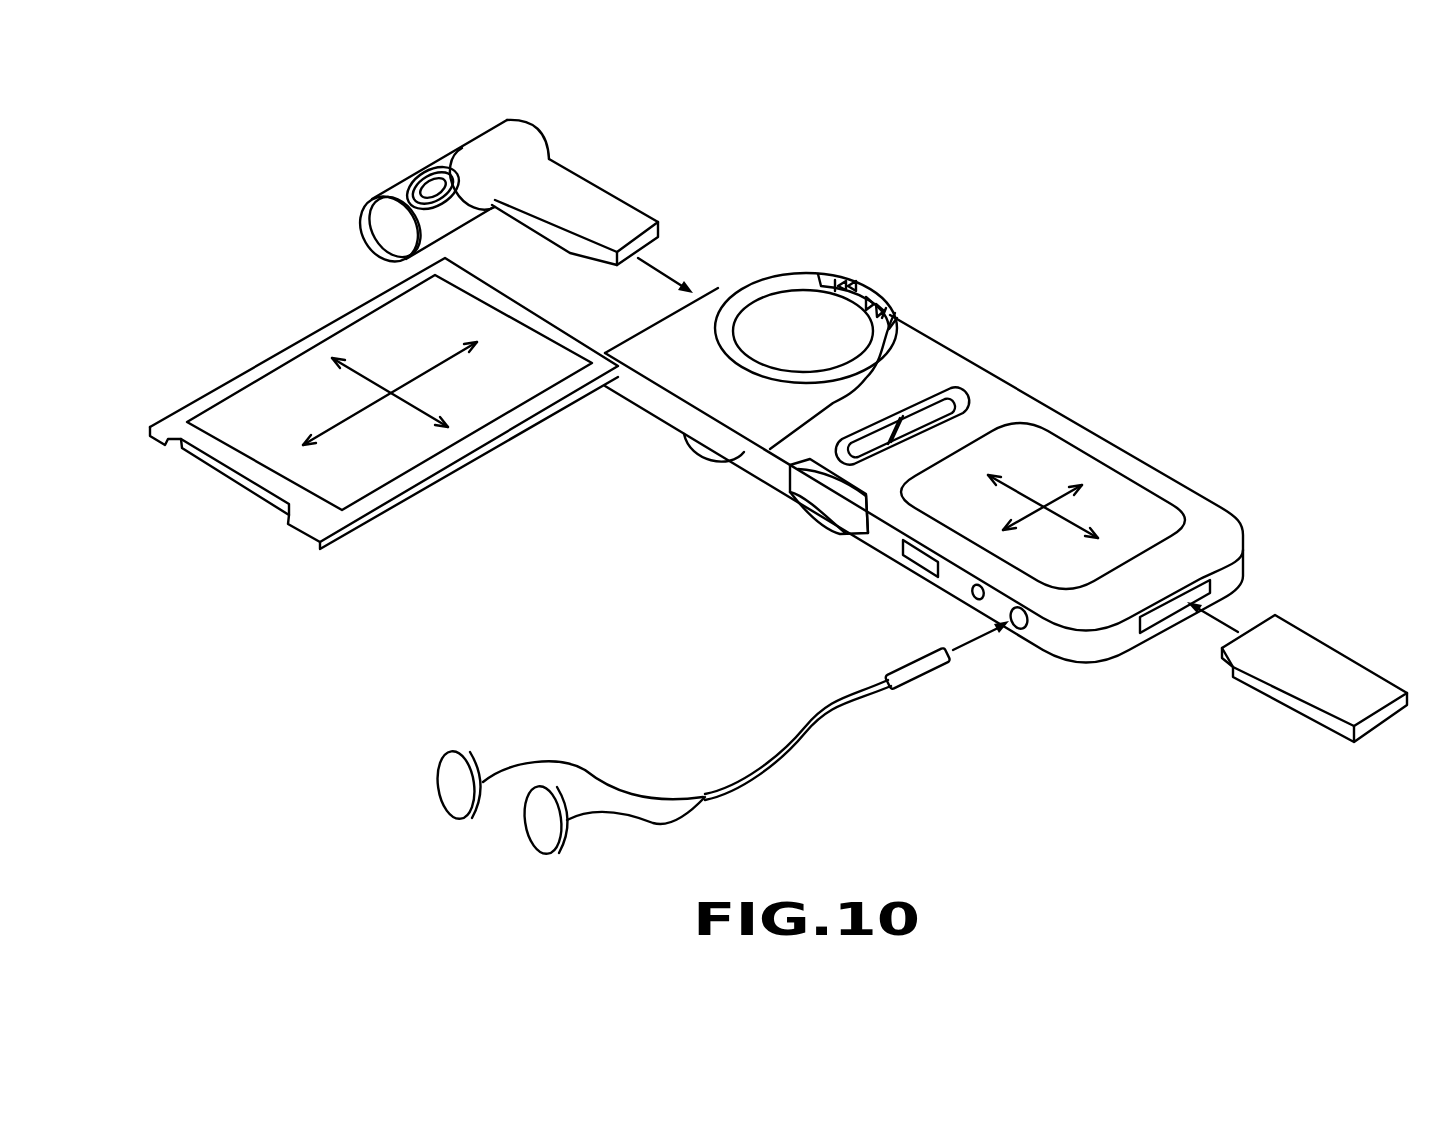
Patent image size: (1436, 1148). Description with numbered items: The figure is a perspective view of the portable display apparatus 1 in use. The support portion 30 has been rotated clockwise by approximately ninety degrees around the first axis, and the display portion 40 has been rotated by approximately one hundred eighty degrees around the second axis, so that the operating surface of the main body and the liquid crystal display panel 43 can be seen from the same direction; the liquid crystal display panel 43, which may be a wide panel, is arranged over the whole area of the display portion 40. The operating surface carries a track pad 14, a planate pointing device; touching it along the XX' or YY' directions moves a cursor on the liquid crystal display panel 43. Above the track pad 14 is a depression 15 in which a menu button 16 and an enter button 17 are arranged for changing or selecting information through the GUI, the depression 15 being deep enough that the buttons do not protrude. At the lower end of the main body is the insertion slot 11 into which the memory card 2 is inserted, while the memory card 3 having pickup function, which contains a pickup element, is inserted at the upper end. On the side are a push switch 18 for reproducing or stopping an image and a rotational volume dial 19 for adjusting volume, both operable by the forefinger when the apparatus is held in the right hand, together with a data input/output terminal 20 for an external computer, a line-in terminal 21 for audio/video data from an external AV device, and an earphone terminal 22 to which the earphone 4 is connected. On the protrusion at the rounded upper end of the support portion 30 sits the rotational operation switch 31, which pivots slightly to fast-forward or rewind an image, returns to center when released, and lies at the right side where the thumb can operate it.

The portable display apparatus 1 is at (910, 180).
The memory card 2 is at (1296, 688).
The memory card having pickup function 3 is at (420, 178).
The earphone 4 is at (783, 753).
The insertion slot 11 is at (1155, 622).
The track pad 14 is at (1050, 457).
The depression 15 is at (952, 366).
The menu button 16 is at (867, 437).
The enter button 17 is at (938, 380).
The push switch 18 is at (822, 503).
The rotational volume dial 19 is at (709, 455).
The data input/output terminal 20 is at (922, 558).
The line-in terminal 21 is at (973, 597).
The earphone terminal 22 is at (1024, 632).
The support portion 30 is at (720, 302).
The rotational operation switch 31 is at (843, 288).
The display portion 40 is at (384, 403).
The liquid crystal display panel 43 is at (320, 350).